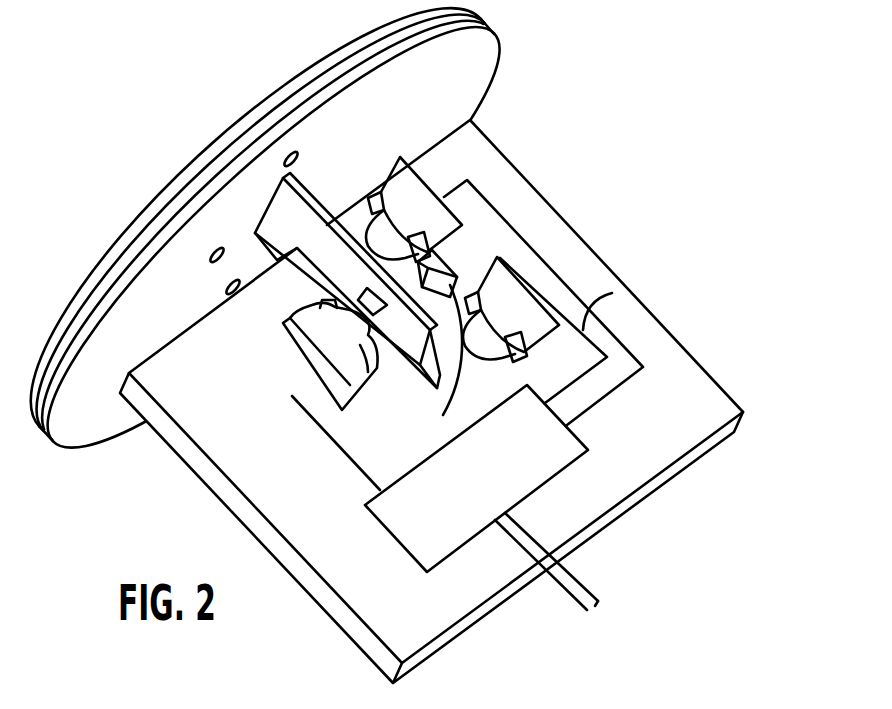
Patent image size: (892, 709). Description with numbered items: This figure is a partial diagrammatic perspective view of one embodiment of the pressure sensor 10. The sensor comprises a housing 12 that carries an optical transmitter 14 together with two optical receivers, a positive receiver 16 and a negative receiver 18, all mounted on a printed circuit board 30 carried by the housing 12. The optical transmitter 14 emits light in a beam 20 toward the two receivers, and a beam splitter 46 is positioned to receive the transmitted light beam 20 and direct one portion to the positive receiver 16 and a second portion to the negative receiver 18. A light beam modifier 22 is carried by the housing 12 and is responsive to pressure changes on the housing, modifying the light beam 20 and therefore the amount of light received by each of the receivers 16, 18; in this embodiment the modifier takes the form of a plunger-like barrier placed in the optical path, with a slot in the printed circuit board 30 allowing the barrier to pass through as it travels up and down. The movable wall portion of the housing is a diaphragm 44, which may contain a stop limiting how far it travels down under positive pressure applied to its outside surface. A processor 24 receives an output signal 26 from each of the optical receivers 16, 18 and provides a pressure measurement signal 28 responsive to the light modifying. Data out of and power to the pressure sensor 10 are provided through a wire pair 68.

The pressure sensor 10 is at (590, 100).
The housing 12 is at (279, 246).
The optical transmitter 14 is at (327, 340).
The positive receiver 16 is at (510, 287).
The negative receiver 18 is at (423, 190).
The light beam 20 is at (455, 390).
The light beam modifier 22 is at (308, 274).
The processor 24 is at (491, 494).
The output signal 26 is at (580, 322).
The pressure measurement signal 28 is at (568, 574).
The printed circuit board 30 is at (700, 398).
The diaphragm 44 is at (132, 247).
The beam splitter 46 is at (436, 258).
The wire pair 68 is at (592, 612).